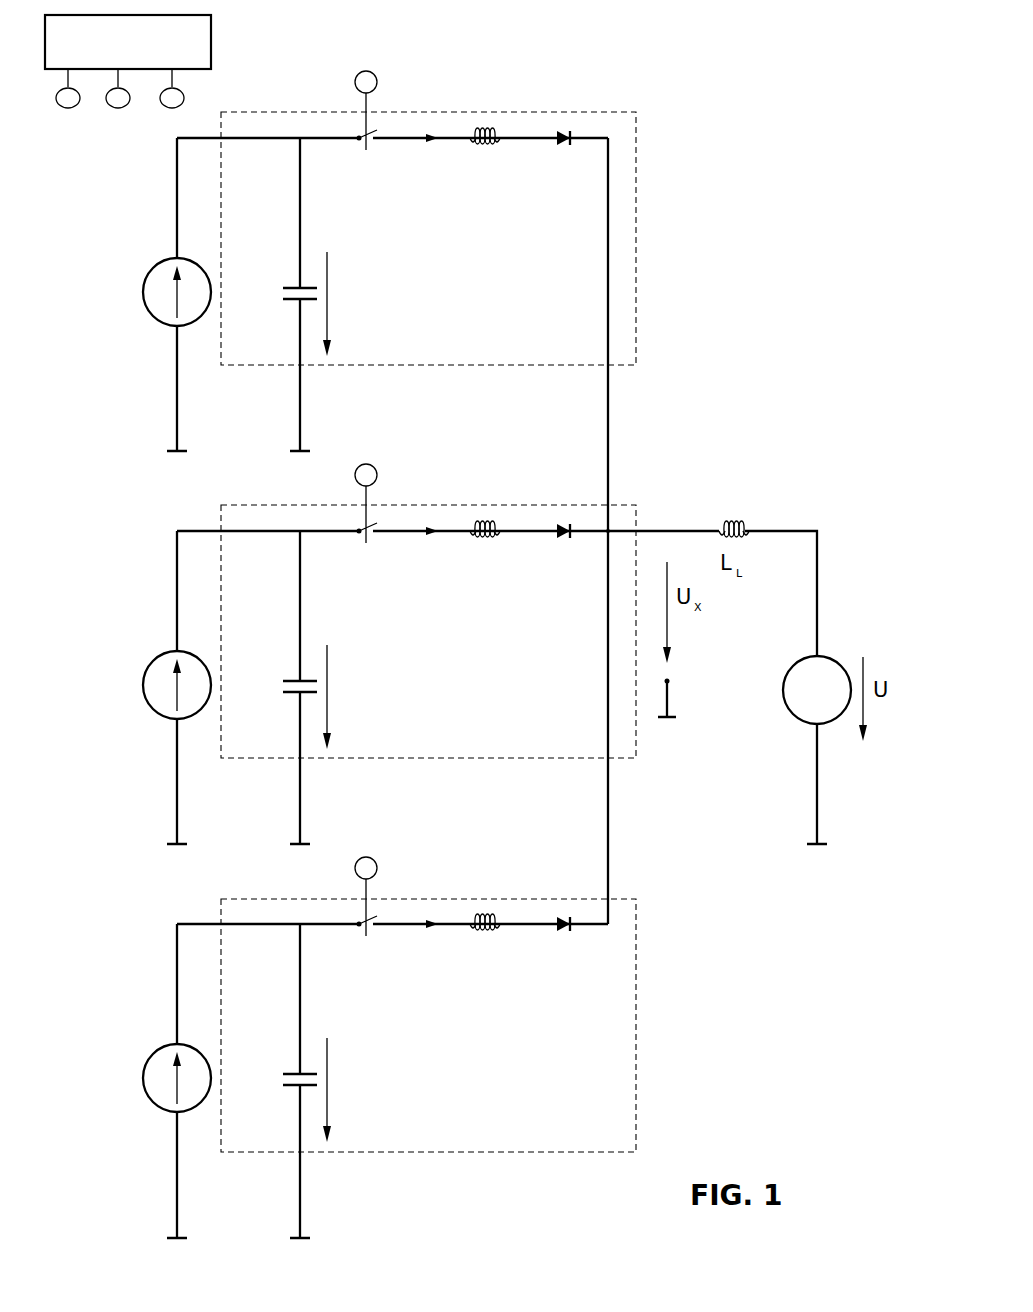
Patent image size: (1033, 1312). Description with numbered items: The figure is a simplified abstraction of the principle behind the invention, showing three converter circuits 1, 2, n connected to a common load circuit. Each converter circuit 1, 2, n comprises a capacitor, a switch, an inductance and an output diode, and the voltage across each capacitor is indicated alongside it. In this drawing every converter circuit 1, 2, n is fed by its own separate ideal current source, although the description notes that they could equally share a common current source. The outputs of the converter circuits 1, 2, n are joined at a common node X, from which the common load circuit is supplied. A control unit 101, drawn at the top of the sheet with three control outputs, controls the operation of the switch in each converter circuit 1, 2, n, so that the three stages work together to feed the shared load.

The control unit 101 is at (211, 33).
The converter circuit 1 is at (637, 131).
The converter circuit 2 is at (636, 516).
The converter circuit n is at (637, 925).
The common output node X is at (608, 531).